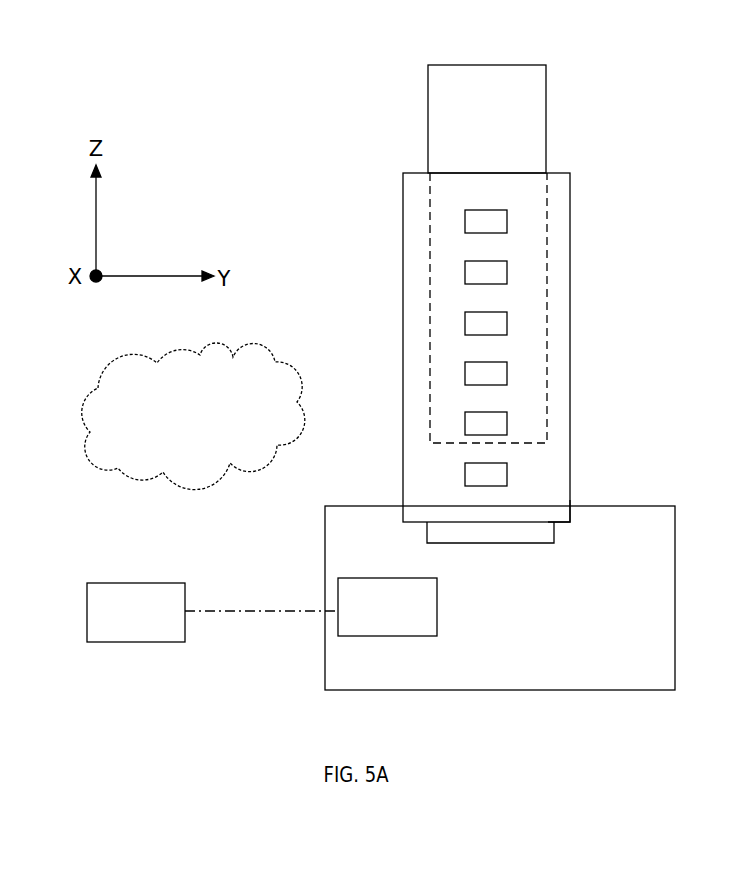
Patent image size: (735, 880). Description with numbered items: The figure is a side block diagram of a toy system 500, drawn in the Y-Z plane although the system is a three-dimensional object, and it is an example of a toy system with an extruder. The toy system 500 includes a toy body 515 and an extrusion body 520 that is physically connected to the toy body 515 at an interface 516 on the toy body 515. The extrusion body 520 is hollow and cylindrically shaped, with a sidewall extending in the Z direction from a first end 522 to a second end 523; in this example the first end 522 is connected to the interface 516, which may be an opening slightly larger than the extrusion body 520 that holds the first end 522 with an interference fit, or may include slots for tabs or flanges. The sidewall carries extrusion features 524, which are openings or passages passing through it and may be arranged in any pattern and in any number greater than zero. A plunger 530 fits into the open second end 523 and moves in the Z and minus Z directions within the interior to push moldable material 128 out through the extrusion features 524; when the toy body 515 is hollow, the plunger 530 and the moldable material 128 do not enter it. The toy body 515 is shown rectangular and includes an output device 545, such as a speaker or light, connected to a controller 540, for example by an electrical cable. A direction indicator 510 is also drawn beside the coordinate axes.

The toy system 500 is at (197, 54).
The vertical direction / gravity direction indicator 510 is at (326, 292).
The moldable material 128 is at (193, 416).
The plunger 530 is at (547, 127).
The extrusion body 520 is at (570, 250).
The second end 523 is at (561, 173).
The extrusion features 524 is at (497, 330).
The first end 522 is at (570, 518).
The toy body 515 is at (500, 598).
The interface 516 is at (510, 532).
The output device 545 is at (387, 607).
The controller 540 is at (212, 612).